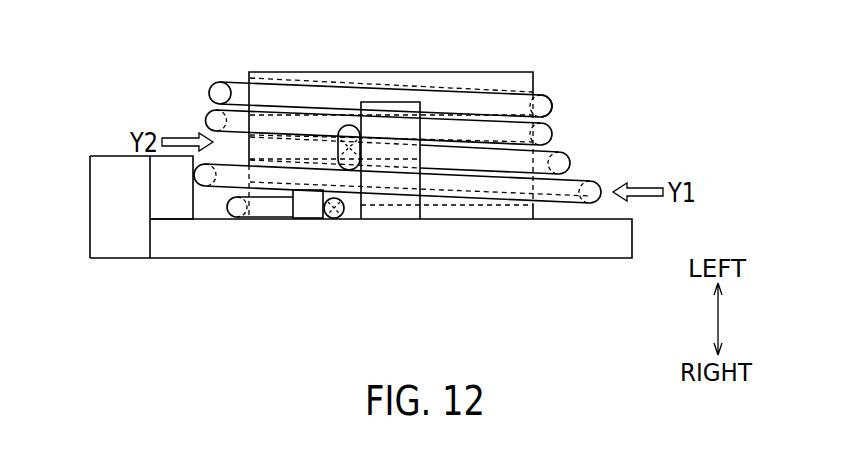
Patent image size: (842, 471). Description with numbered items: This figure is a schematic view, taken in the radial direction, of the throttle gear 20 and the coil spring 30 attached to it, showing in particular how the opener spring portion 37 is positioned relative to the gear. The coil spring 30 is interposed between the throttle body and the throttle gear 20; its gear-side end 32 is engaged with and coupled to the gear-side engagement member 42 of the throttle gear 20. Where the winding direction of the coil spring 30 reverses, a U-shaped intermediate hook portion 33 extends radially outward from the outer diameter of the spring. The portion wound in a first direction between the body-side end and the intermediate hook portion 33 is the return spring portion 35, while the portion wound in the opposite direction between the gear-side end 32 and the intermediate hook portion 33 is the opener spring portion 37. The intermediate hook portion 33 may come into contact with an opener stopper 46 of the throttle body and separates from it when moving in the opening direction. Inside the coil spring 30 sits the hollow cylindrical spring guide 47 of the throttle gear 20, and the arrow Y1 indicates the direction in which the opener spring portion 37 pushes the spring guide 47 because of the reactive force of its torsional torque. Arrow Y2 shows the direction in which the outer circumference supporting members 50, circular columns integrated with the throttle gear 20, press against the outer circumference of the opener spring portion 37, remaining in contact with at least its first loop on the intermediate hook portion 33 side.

The throttle gear 20 is at (504, 269).
The coil spring 30 is at (212, 73).
The gear-side end 32 is at (336, 214).
The intermediate hook portion 33 is at (343, 132).
The return spring portion 35 is at (543, 107).
The opener spring portion 37 is at (206, 176).
The gear-side engagement member 42 is at (300, 205).
The opener stopper 46 is at (400, 110).
The spring guide 47 is at (488, 82).
The outer circumference supporting members 50 is at (168, 190).